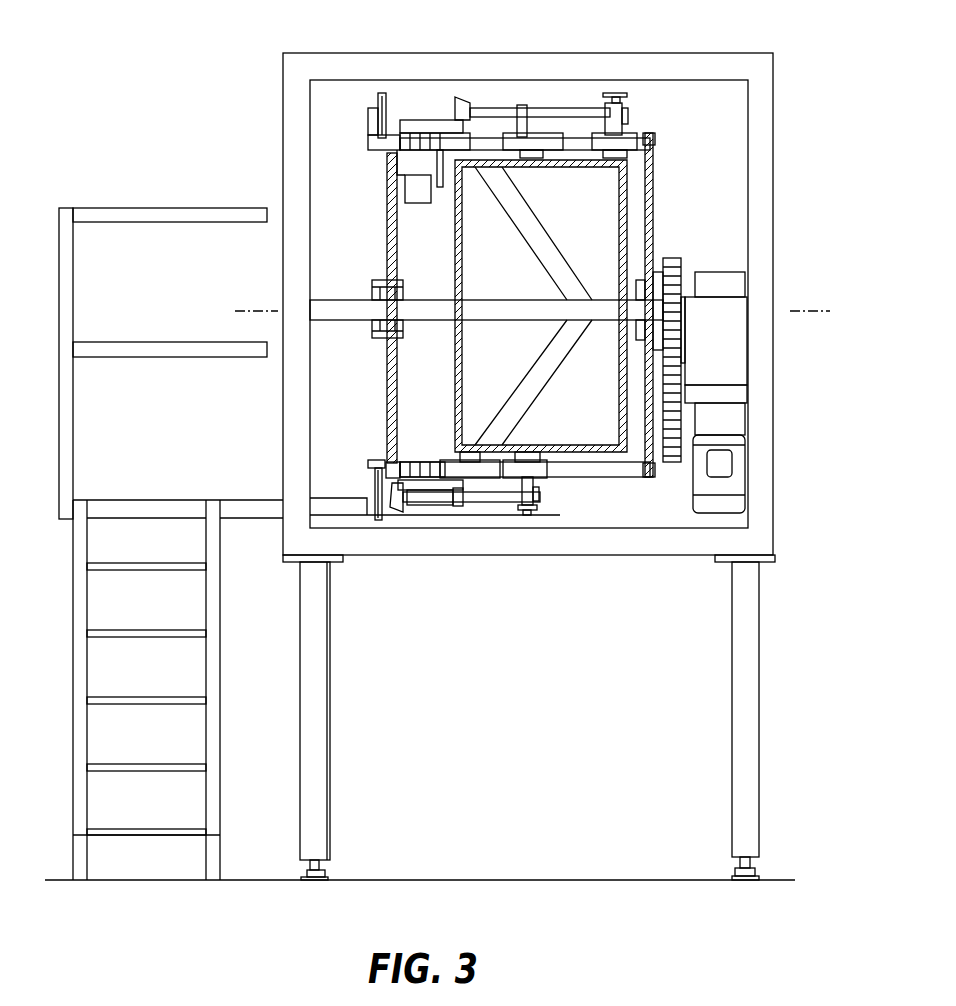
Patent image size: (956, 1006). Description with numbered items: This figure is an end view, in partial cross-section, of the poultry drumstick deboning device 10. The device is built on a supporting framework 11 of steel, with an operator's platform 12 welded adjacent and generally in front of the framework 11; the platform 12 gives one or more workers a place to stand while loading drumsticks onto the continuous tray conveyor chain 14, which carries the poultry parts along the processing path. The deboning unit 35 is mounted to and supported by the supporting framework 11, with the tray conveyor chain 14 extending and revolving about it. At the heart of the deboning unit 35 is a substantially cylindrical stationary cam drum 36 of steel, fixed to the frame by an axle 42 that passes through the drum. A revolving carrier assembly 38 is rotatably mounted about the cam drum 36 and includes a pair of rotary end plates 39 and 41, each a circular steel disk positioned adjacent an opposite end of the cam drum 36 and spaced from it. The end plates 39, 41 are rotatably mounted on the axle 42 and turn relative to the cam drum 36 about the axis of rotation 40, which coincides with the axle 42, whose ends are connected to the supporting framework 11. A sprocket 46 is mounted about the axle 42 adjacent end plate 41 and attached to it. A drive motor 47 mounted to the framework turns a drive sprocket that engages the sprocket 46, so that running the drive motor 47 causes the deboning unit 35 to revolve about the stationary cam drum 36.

The deboning device 10 is at (808, 85).
The supporting framework 11 is at (297, 128).
The operator's platform 12 is at (127, 505).
The tray conveyor chain 14 is at (413, 120).
The deboning unit 35 is at (682, 151).
The cam drum 36 is at (455, 383).
The carrier assembly 38 is at (685, 305).
The rotary end plate 39 is at (388, 195).
The axis of rotation 40 is at (240, 310).
The rotary end plate 41 is at (650, 222).
The axle 42 is at (340, 302).
The sprocket 46 is at (682, 270).
The drive motor 47 is at (735, 480).